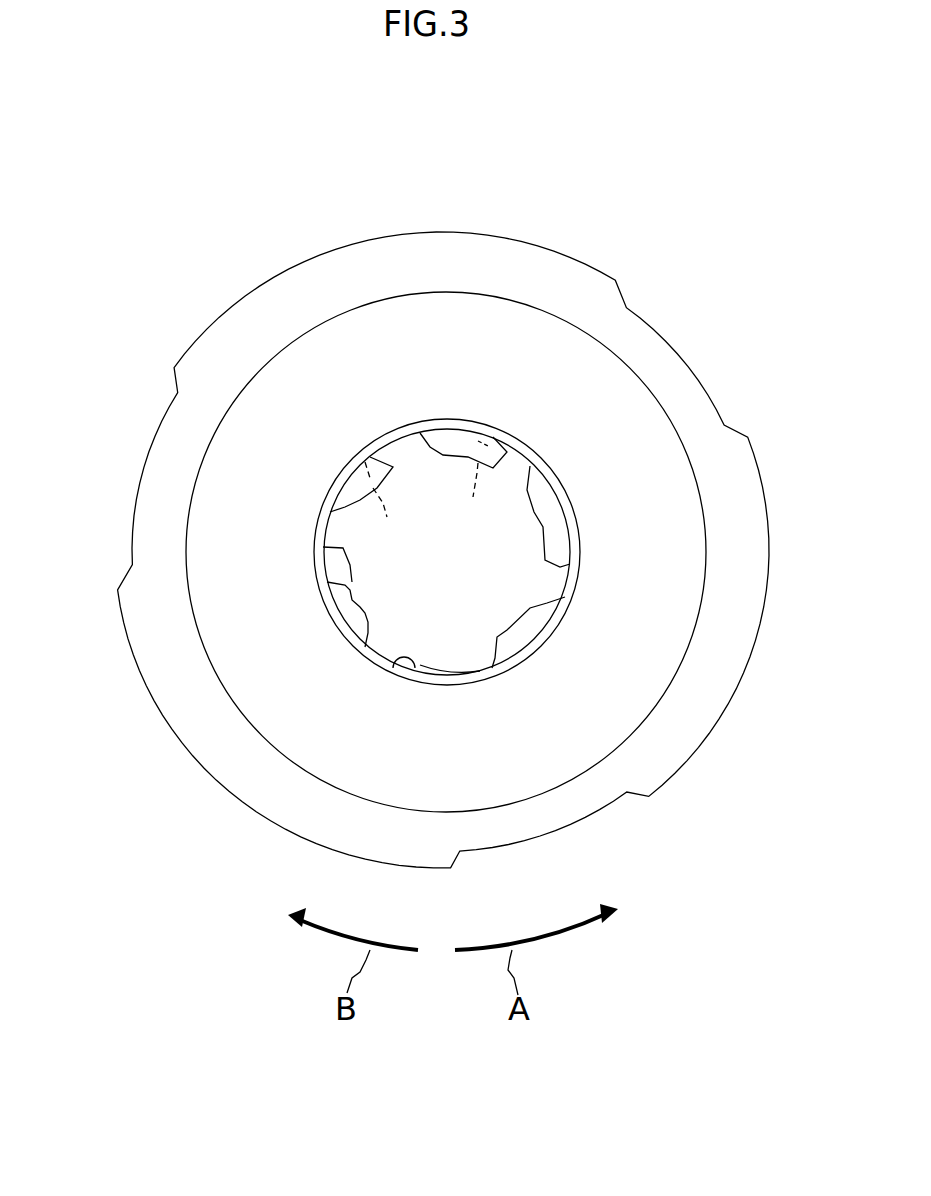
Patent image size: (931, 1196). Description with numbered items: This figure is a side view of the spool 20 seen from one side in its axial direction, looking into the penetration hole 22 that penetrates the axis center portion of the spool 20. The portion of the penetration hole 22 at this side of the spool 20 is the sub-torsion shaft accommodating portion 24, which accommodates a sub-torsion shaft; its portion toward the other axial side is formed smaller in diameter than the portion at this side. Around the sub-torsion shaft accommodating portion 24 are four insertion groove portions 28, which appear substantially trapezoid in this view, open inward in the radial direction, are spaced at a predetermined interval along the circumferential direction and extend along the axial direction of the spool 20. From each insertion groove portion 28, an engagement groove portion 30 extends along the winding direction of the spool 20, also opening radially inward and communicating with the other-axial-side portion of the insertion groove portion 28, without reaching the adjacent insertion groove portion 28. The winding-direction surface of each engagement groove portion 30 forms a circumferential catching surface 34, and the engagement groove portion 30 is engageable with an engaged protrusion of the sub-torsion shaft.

The spool 20 is at (568, 254).
The penetration hole 22 is at (407, 680).
The sub-torsion shaft accommodating portion 24 is at (472, 658).
The insertion groove portions 28 is at (402, 450).
The engagement groove portions 30 is at (365, 462).
The circumferential catching surface 34 is at (387, 517).